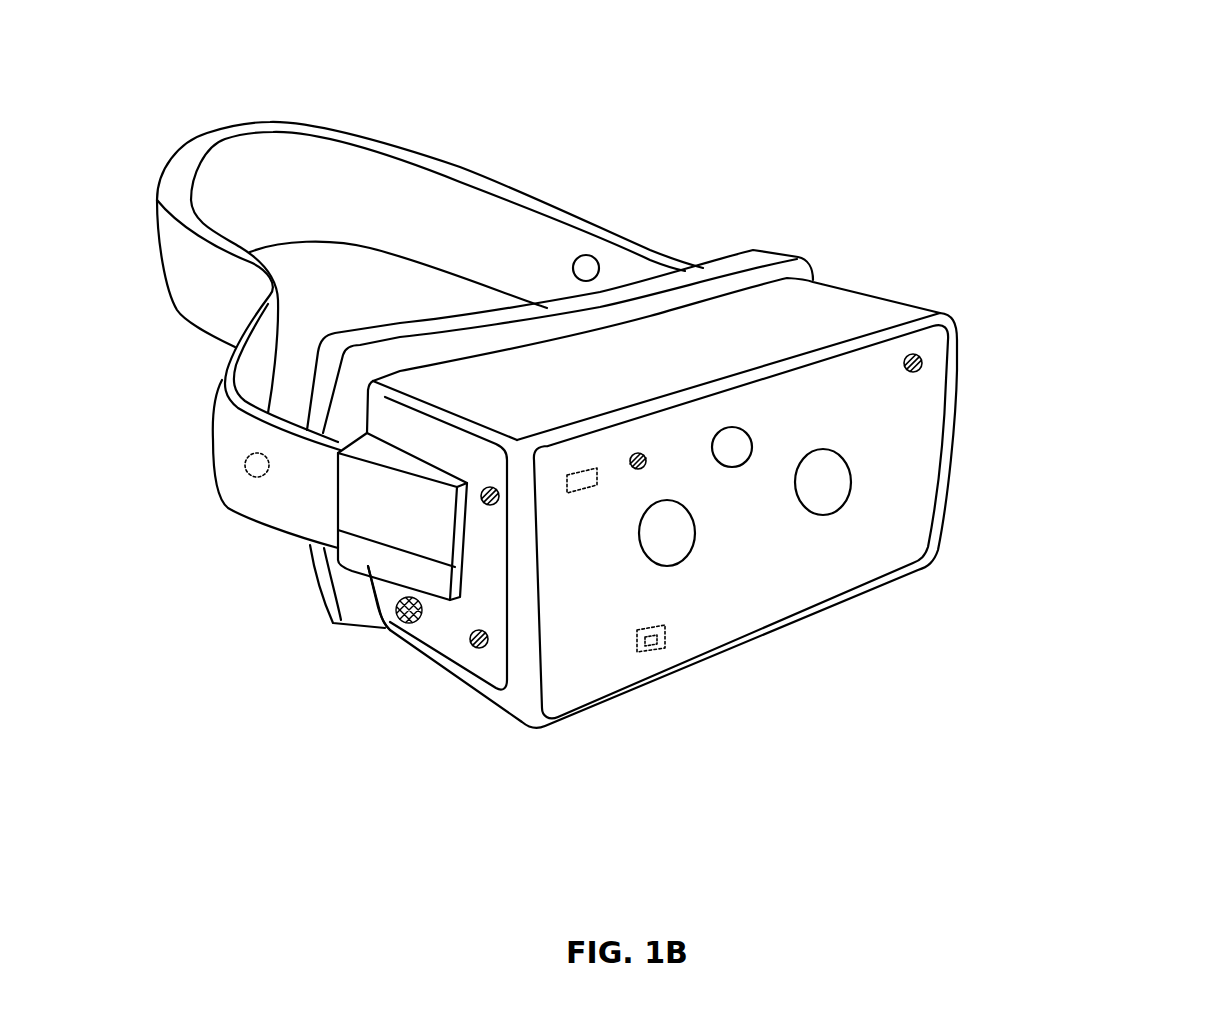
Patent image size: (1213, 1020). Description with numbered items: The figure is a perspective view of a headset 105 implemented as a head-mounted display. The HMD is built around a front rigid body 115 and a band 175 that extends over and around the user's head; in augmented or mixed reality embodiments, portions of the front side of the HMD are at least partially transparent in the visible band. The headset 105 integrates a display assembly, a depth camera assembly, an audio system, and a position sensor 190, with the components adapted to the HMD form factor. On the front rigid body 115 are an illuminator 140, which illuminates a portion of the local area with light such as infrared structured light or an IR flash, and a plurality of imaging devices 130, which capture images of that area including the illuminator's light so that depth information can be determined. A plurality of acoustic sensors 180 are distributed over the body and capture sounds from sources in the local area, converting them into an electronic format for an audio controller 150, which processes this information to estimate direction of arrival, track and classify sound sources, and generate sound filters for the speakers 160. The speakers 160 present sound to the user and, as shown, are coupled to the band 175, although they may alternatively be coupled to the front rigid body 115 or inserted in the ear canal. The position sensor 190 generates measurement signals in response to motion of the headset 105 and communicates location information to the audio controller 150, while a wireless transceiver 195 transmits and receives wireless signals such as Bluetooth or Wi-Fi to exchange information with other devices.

The headset 105 is at (548, 366).
The front rigid body 115 is at (948, 312).
The imaging device 130 is at (688, 555).
The illuminator 140 is at (733, 426).
The audio controller 150 is at (567, 493).
The speaker 160 is at (248, 478).
The band 175 is at (562, 207).
The acoustic sensor 180 is at (472, 647).
The position sensor 190 is at (667, 637).
The wireless transceiver 195 is at (397, 618).